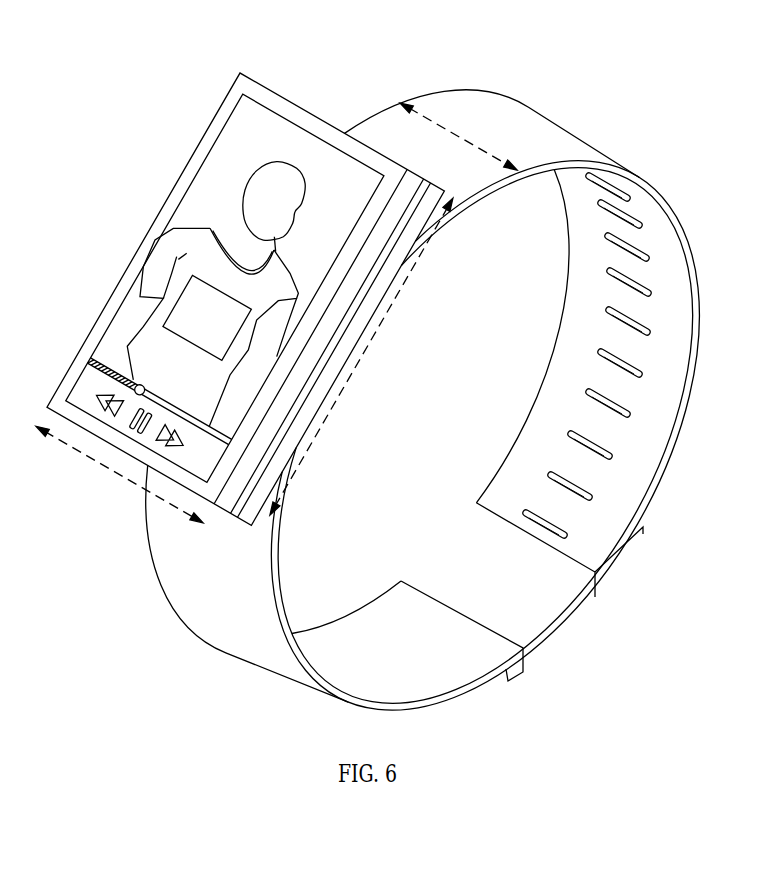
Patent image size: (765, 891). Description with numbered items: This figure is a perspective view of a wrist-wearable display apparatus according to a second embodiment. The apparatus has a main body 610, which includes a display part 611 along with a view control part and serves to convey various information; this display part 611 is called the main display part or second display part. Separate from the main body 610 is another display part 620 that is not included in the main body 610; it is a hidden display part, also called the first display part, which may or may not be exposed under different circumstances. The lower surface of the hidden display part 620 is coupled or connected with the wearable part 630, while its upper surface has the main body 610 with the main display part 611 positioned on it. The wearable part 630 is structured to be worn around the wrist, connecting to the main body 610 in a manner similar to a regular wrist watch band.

The main body 610 is at (200, 117).
The display part 611 is at (120, 300).
The hidden display part 620 is at (388, 289).
The wearable part 630 is at (565, 118).